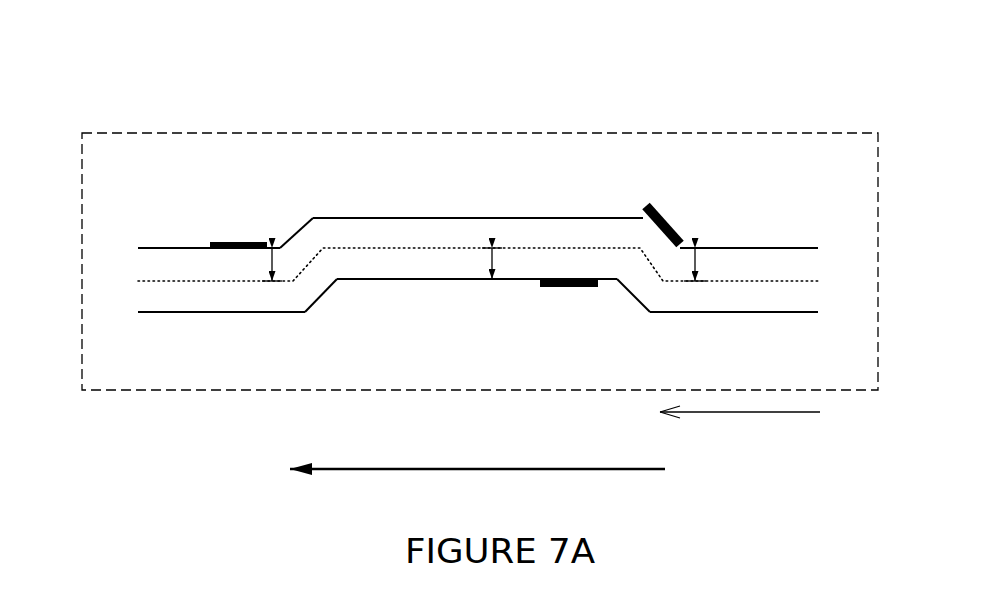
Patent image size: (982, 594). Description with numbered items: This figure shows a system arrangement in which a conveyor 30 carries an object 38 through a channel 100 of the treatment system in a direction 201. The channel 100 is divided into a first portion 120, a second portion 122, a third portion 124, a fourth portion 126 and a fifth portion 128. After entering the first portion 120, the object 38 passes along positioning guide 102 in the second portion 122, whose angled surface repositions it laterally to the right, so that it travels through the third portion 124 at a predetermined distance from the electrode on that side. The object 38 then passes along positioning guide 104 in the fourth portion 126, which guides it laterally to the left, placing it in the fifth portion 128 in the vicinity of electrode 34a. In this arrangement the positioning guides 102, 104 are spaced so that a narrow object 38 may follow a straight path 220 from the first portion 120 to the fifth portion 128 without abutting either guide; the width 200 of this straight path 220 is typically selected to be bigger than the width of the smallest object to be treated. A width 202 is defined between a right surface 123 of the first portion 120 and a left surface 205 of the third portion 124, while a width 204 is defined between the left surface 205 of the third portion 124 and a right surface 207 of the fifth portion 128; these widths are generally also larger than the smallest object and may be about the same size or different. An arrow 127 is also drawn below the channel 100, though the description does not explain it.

The conveyor 30 is at (187, 100).
The electrode 34a is at (212, 220).
The object 38 is at (800, 249).
The channel 100 is at (750, 297).
The positioning guide 102 is at (623, 310).
The positioning guide 104 is at (286, 227).
The first portion of channel 120 is at (743, 228).
The second portion of channel 122 is at (668, 195).
The right surface of first portion 123 is at (708, 248).
The third portion of channel 124 is at (537, 207).
The fourth portion of channel 126 is at (328, 300).
The return flow direction 127 is at (820, 412).
The fifth portion of channel 128 is at (202, 318).
The width of straight path 200 is at (494, 265).
The direction 201 is at (625, 462).
The width 202 is at (697, 265).
The width 204 is at (277, 265).
The left surface of third portion 205 is at (475, 280).
The right surface of fifth portion 207 is at (242, 242).
The straight path 220 is at (207, 264).